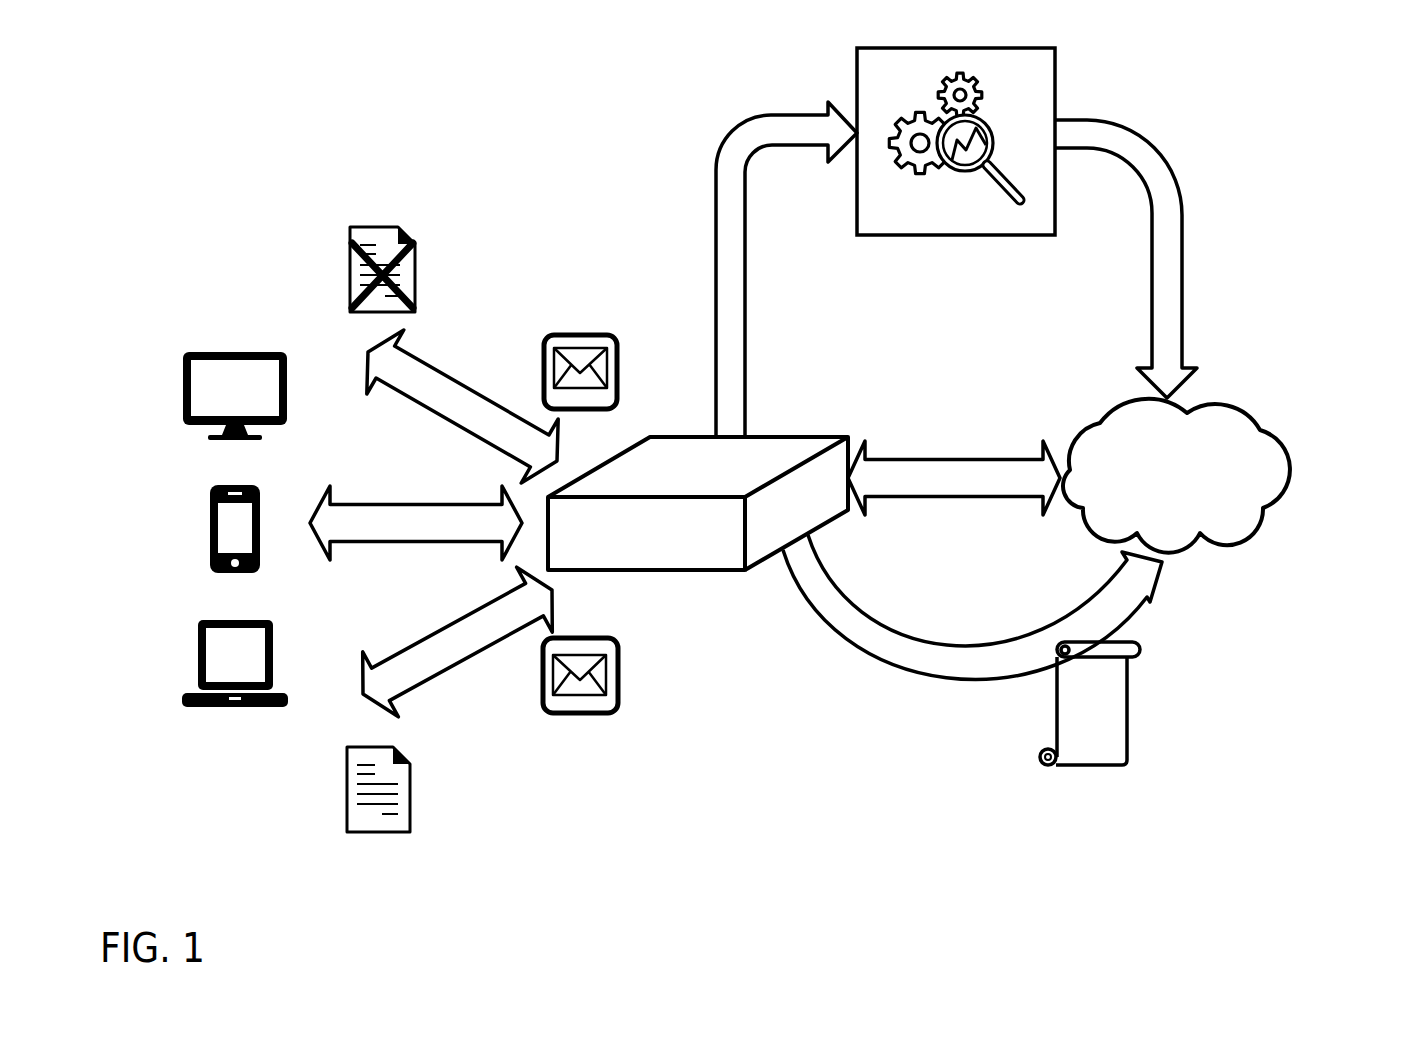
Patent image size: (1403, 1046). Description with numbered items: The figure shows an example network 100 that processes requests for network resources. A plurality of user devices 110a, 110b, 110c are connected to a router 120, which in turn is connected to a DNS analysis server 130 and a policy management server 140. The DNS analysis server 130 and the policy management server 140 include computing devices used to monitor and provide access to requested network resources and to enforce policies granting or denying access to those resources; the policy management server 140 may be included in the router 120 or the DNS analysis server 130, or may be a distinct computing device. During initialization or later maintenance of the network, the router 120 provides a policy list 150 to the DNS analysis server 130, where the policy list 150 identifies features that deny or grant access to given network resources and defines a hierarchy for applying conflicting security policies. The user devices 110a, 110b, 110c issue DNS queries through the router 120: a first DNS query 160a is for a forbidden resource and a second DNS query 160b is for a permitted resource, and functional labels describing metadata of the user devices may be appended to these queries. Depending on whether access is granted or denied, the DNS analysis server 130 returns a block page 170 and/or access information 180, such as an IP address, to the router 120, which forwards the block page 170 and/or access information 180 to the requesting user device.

The network 100 is at (1316, 135).
The user device 110a is at (183, 425).
The user device 110b is at (210, 565).
The user device 110c is at (198, 655).
The router 120 is at (722, 572).
The DNS analysis server 130 is at (1158, 490).
The policy management server 140 is at (945, 235).
The policy list 150 is at (1127, 700).
The first DNS query 160a is at (598, 334).
The second DNS query 160b is at (603, 713).
The block page 170 is at (415, 268).
The access information 180 is at (410, 790).